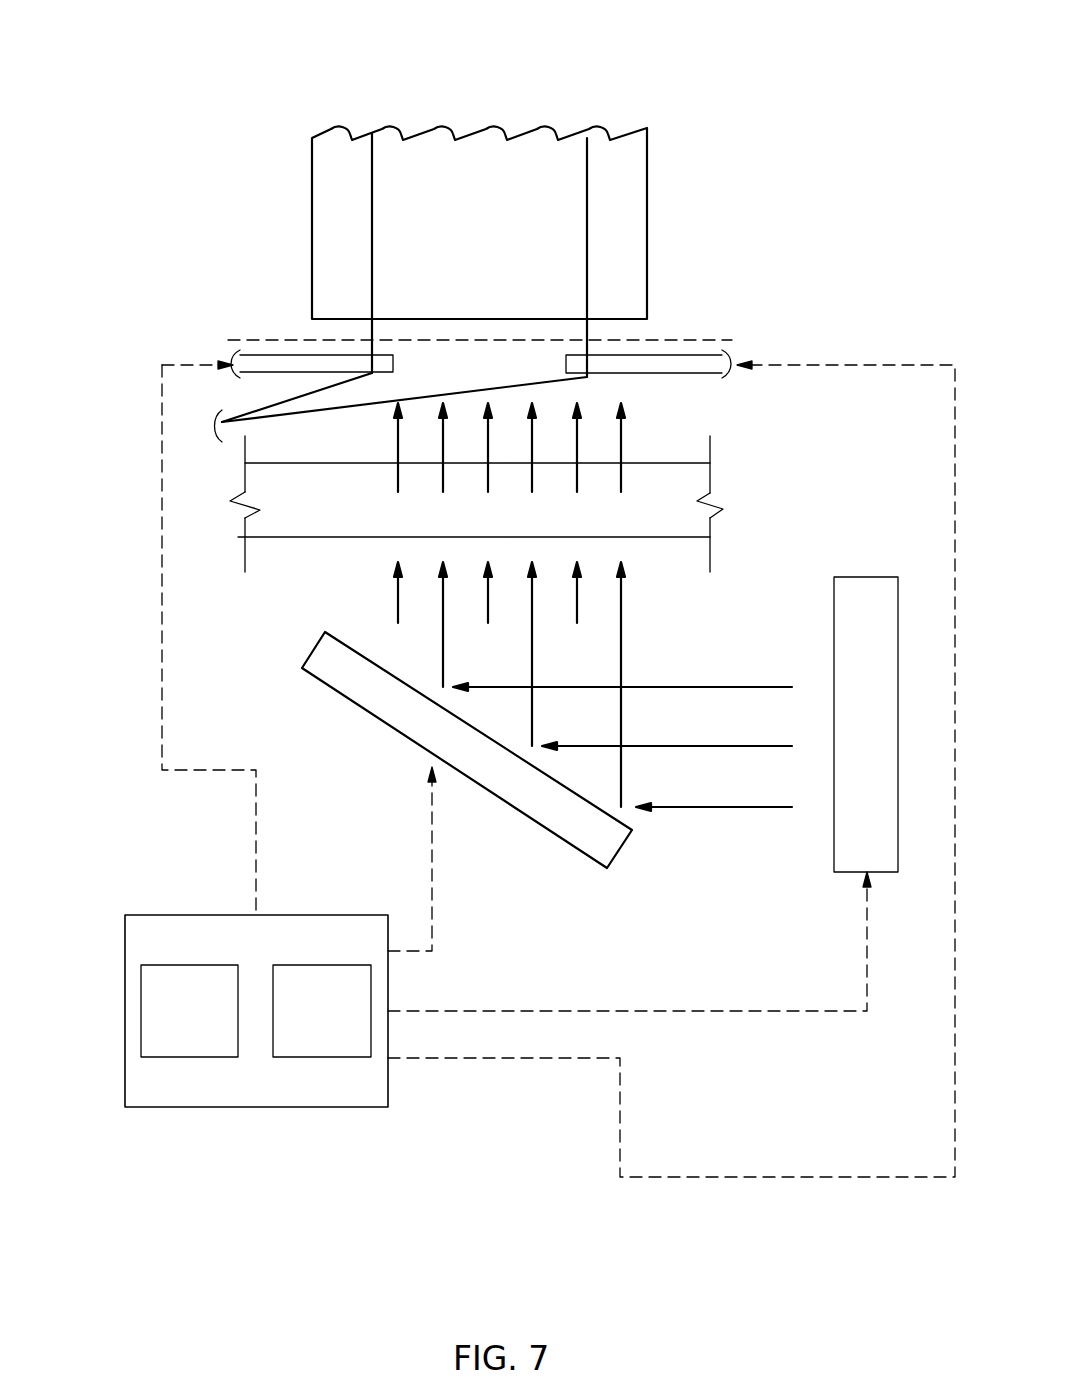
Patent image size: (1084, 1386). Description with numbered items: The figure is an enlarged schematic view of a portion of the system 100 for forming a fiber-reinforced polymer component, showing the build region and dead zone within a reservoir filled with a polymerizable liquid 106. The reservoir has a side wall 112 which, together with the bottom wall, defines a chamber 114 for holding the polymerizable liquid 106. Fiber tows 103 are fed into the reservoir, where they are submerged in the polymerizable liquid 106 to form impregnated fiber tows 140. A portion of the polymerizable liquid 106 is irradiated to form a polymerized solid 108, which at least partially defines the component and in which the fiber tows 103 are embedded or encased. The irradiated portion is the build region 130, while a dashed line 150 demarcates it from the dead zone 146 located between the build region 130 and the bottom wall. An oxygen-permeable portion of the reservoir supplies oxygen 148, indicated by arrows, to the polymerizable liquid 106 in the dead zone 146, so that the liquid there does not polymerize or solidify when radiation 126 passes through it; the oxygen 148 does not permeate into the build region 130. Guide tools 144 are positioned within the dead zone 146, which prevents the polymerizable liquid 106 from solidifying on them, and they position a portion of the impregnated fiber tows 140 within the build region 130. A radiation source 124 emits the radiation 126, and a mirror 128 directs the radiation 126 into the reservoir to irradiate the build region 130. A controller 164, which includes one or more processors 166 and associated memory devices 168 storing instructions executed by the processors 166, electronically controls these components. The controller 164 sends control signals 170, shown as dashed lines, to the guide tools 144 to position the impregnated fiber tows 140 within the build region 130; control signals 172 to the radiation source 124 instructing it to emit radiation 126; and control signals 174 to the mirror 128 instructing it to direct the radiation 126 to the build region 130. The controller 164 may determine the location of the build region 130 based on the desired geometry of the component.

The system 100 is at (141, 82).
The fiber tows 103 is at (372, 232).
The polymerizable liquid 106 is at (422, 365).
The polymerized solid 108 is at (648, 213).
The side wall 112 is at (222, 487).
The chamber 114 is at (273, 538).
The radiation source 124 is at (833, 837).
The radiation 126 is at (532, 440).
The mirror 128 is at (372, 717).
The build region 130 is at (652, 325).
The impregnated fiber tows 140 is at (297, 400).
The guide tools 144 is at (267, 353).
The dead zone 146 is at (535, 365).
The oxygen 148 is at (395, 480).
The dashed line 150 is at (707, 340).
The controller 164 is at (232, 1107).
The processors 166 is at (189, 1011).
The memory devices 168 is at (322, 1011).
The control signals 170 is at (162, 543).
The control signals 172 is at (702, 1012).
The control signals 174 is at (432, 865).